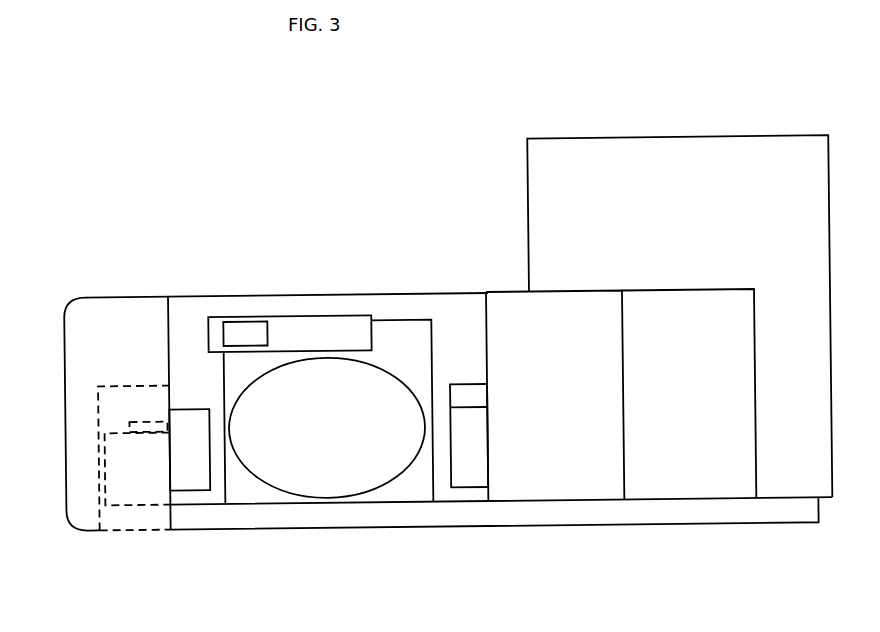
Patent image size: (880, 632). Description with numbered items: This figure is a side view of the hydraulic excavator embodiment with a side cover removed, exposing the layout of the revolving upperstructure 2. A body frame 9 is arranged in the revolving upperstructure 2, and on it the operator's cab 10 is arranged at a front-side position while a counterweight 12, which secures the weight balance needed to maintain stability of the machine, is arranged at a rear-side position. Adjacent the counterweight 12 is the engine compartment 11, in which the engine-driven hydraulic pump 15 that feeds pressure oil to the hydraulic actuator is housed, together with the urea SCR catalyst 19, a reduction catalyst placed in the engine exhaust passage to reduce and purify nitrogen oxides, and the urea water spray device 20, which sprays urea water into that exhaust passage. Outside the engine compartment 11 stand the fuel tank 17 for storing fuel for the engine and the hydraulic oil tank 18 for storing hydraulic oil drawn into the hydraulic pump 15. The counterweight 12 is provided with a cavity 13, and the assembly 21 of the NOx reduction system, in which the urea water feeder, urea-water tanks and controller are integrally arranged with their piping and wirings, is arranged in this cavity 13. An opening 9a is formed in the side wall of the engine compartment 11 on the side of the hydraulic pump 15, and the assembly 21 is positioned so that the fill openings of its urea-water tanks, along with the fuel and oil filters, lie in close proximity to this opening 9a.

The revolving upperstructure 2 is at (462, 285).
The body frame 9 is at (457, 528).
The opening 9a is at (195, 318).
The operator's cab 10 is at (638, 138).
The engine compartment 11 is at (404, 306).
The counterweight 12 is at (67, 430).
The cavity 13 is at (137, 397).
The hydraulic pump 15 is at (328, 480).
The fuel tank 17 is at (697, 468).
The hydraulic oil tank 18 is at (570, 472).
The urea SCR catalyst 19 is at (245, 320).
The urea water spray device 20 is at (289, 314).
The assembly 21 is at (150, 492).